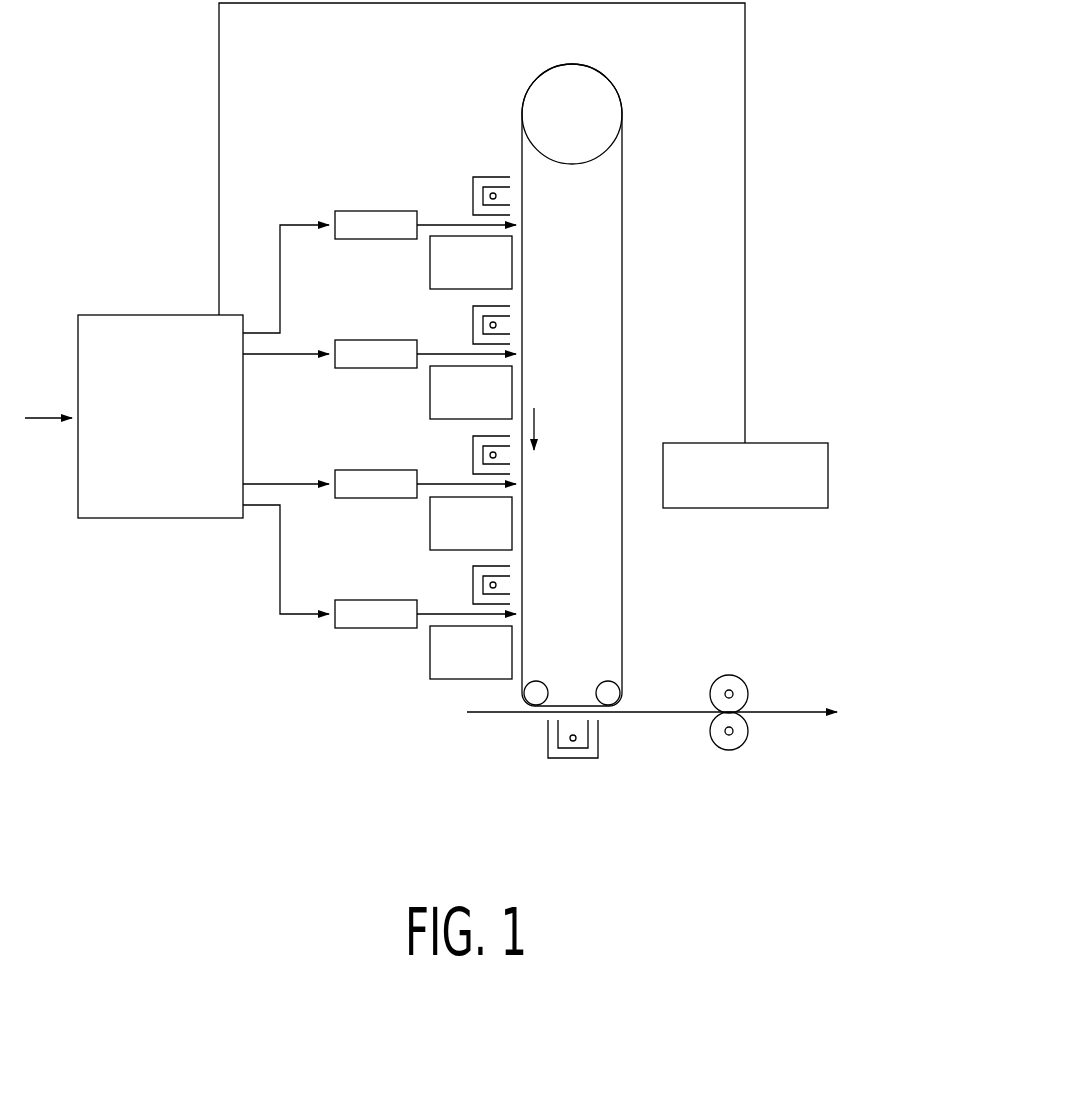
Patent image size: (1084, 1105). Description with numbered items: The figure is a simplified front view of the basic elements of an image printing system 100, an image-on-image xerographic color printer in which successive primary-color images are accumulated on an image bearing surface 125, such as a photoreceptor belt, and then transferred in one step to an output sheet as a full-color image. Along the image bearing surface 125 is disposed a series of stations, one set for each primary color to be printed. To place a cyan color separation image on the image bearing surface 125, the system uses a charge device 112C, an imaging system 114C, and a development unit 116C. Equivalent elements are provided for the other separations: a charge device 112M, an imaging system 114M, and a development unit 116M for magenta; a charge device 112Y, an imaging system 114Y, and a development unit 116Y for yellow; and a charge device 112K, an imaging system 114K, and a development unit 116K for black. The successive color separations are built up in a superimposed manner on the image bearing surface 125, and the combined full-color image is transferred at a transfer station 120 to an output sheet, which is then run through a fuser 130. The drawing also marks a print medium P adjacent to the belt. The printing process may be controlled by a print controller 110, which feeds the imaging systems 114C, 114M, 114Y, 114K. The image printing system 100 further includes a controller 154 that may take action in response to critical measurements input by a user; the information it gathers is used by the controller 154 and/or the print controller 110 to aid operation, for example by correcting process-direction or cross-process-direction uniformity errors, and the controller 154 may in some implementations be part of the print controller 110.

The image printing system 100 is at (166, 116).
The print controller 110 is at (160, 313).
The imaging system 114C is at (350, 211).
The imaging system 114M is at (350, 340).
The imaging system 114Y is at (350, 470).
The imaging system 114K is at (350, 600).
The charge device 112C is at (473, 202).
The charge device 112M is at (473, 331).
The charge device 112Y is at (473, 461).
The charge device 112K is at (473, 591).
The development unit 116C is at (430, 263).
The development unit 116M is at (430, 391).
The development unit 116Y is at (430, 523).
The development unit 116K is at (430, 653).
The image bearing surface 125 is at (622, 324).
The print medium P is at (536, 424).
The transfer station 120 is at (618, 730).
The fuser 130 is at (724, 656).
The controller 154 is at (785, 443).